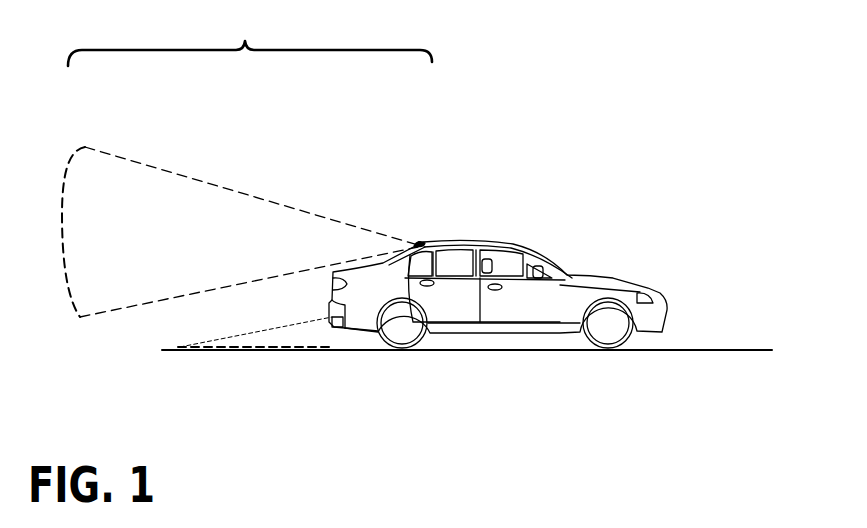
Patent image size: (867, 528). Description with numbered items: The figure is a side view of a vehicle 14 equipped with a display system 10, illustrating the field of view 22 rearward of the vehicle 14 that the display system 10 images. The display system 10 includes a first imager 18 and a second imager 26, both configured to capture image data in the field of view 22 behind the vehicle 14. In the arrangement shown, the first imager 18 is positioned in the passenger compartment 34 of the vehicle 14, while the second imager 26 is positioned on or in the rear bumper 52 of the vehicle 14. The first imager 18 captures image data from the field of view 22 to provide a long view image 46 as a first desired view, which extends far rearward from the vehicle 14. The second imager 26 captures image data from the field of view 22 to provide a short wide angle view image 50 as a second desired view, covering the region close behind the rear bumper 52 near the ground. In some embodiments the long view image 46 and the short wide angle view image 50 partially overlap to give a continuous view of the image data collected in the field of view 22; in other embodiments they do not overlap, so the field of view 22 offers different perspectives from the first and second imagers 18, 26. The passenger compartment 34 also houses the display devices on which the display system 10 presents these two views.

The display system 10 is at (298, 310).
The vehicle 14 is at (620, 272).
The first imager 18 is at (418, 241).
The field of view 22 is at (250, 38).
The second imager 26 is at (347, 330).
The passenger compartment 34 is at (522, 270).
The long view image 46 is at (63, 192).
The short wide angle view image 50 is at (232, 352).
The rear bumper 52 is at (330, 314).